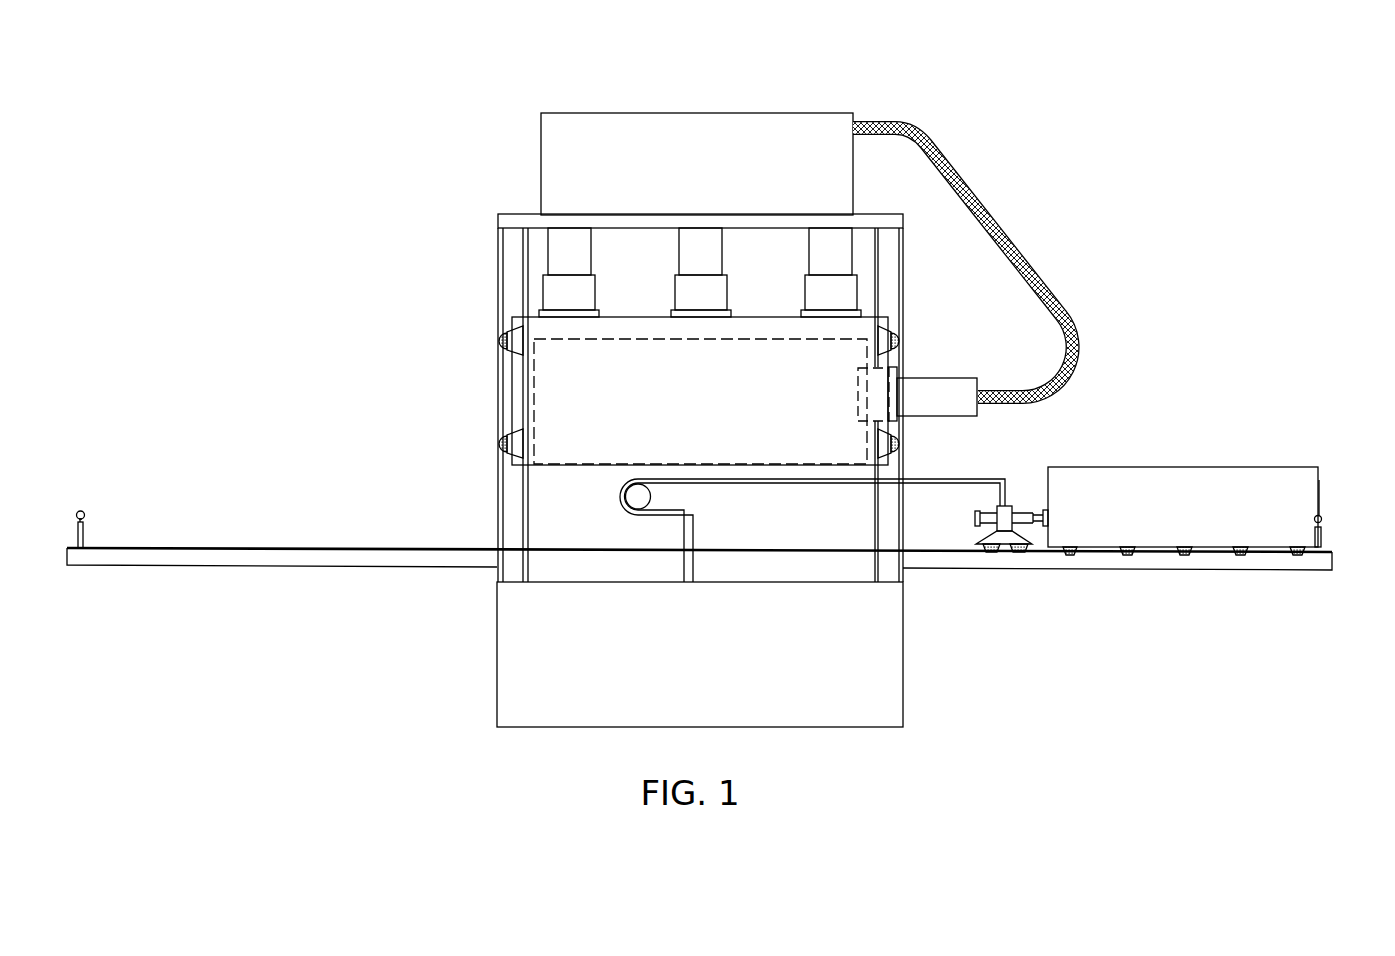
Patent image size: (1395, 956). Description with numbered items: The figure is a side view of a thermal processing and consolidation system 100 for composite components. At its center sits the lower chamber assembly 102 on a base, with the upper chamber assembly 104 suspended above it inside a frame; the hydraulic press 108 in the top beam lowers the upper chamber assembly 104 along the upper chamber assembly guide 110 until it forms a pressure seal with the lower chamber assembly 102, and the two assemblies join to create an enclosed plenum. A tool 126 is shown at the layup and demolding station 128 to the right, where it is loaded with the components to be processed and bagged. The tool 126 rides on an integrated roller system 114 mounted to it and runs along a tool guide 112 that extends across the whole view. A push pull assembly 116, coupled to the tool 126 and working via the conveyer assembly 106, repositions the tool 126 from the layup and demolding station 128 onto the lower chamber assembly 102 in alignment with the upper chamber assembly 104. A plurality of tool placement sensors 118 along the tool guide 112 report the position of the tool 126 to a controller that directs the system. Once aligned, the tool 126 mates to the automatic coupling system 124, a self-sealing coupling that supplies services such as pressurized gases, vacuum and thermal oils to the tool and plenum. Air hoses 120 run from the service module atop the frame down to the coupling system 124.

The thermal processing and consolidation system 100 is at (1072, 119).
The lower chamber assembly 102 is at (497, 540).
The upper chamber assembly 104 is at (512, 323).
The conveyer assembly 106 is at (903, 481).
The hydraulic press 108 is at (865, 215).
The upper chamber assembly guide 110 is at (498, 256).
The tool guide 112 is at (380, 549).
The integrated roller system 114 is at (1073, 554).
The push pull assembly 116 is at (1000, 553).
The tool placement sensors 118 is at (85, 510).
The air hoses 120 is at (985, 196).
The automatic coupling system 124 is at (958, 378).
The tool 126 is at (1183, 507).
The layup and demolding station 128 is at (1105, 568).